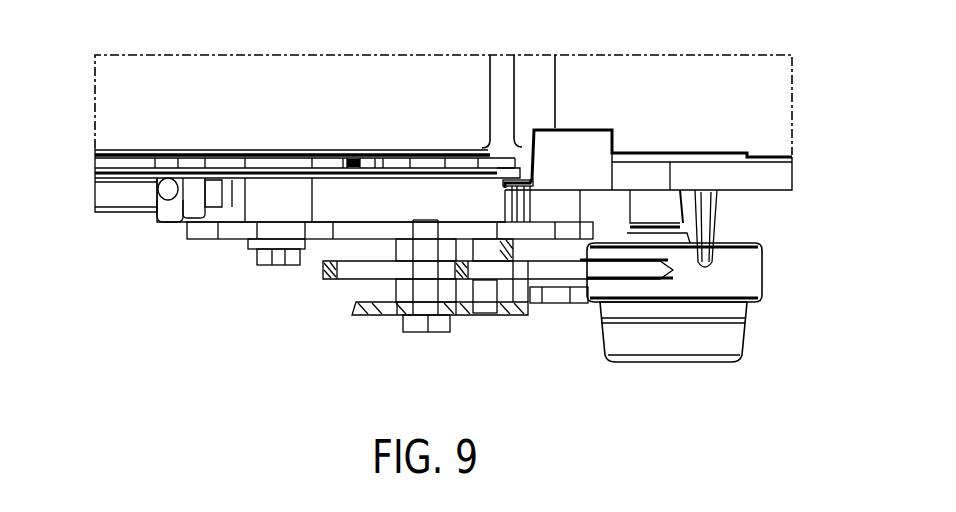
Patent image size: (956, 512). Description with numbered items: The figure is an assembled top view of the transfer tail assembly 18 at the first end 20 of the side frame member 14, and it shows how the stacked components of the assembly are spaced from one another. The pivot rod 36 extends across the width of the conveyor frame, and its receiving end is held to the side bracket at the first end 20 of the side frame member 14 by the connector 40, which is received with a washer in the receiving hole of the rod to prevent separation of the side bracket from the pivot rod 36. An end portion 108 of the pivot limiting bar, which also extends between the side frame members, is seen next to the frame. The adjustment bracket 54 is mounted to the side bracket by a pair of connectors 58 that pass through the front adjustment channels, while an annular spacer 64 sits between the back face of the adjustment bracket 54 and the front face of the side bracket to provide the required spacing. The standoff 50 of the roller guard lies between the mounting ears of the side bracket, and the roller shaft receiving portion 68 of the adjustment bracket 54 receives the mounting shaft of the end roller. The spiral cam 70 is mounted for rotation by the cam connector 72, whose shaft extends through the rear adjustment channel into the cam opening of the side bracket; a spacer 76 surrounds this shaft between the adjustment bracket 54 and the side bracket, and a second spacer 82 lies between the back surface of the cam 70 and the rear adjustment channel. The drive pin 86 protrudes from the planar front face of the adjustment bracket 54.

The side frame member 14 is at (118, 201).
The transfer tail assembly 18 is at (588, 374).
The first end 20 is at (197, 233).
The pivot rod 36 is at (303, 196).
The connector 40 is at (258, 257).
The standoff 50 is at (512, 209).
The adjustment bracket 54 is at (519, 270).
The connector 58 is at (557, 298).
The annular spacer 64 is at (560, 250).
The roller shaft receiving portion 68 is at (750, 276).
The cam 70 is at (365, 312).
The cam connector 72 is at (412, 322).
The spacer 76 is at (400, 246).
The second spacer 82 is at (395, 288).
The drive pin 86 is at (482, 307).
The end portion 108 is at (165, 213).